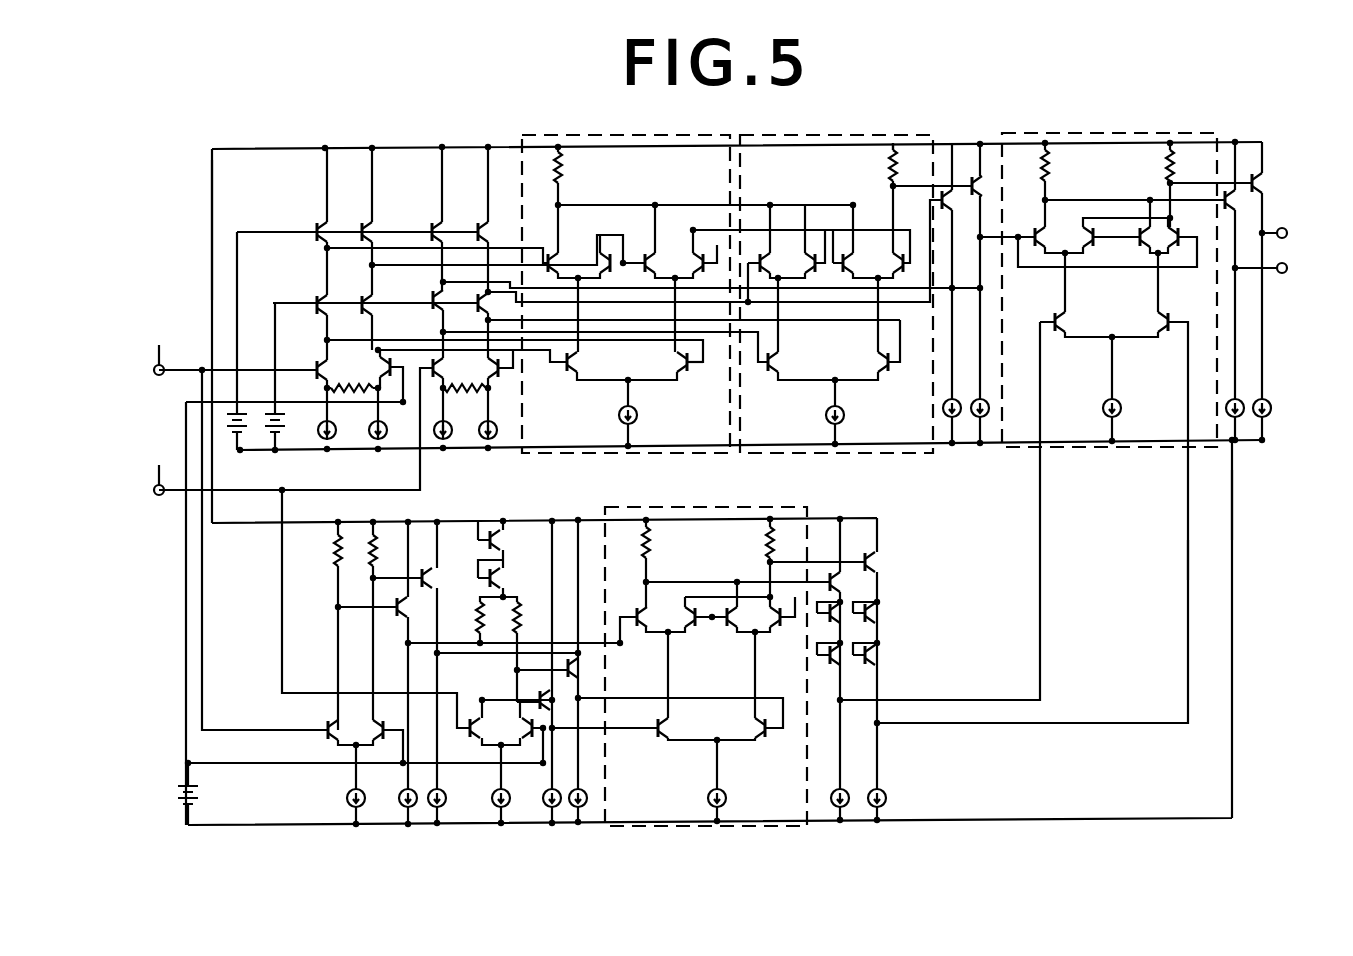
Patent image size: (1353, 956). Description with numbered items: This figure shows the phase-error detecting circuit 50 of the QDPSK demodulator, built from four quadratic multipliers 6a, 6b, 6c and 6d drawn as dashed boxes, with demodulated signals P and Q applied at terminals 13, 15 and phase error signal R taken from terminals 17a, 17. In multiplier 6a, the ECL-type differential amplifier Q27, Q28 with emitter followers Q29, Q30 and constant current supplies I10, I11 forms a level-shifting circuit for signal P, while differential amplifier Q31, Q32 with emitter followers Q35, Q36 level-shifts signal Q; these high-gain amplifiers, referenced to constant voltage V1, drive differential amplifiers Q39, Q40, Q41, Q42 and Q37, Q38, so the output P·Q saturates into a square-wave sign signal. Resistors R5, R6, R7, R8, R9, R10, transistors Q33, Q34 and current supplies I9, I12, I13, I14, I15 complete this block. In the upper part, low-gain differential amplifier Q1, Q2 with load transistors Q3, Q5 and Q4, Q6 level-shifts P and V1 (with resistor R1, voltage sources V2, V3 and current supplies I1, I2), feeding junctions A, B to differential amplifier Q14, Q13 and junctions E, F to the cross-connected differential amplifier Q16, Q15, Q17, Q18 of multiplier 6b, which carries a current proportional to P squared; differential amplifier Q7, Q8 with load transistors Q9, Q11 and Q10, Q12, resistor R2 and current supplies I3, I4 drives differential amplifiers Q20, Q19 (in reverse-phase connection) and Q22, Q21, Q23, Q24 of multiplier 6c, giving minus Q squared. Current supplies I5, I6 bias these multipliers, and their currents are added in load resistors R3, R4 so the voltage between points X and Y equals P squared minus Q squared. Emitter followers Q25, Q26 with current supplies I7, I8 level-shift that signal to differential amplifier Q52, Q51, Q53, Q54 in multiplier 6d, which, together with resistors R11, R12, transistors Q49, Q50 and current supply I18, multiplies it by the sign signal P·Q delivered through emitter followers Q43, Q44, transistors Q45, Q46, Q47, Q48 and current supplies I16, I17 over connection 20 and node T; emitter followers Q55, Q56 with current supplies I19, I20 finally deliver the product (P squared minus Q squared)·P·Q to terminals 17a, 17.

The flip-flop circuit 50 is at (212, 218).
The input terminal P 13 is at (154, 376).
The input terminal Q 15 is at (154, 488).
The terminal 17 is at (1287, 268).
The terminal 17a is at (1318, 222).
The connection line 20 is at (1232, 510).
The quadratic multiplier 6a is at (757, 826).
The quadratic multiplier 6b is at (586, 135).
The quadratic multiplier 6c is at (772, 135).
The quadratic multiplier 6d is at (1217, 370).
The constant voltage V1 is at (200, 797).
The voltage source V2 is at (240, 438).
The voltage source V3 is at (278, 440).
The resistor R1 is at (345, 396).
The resistor R2 is at (455, 396).
The load resistor R3 is at (560, 162).
The load resistor R4 is at (890, 168).
The resistor R5 is at (334, 560).
The resistor R6 is at (368, 548).
The resistor R7 is at (474, 618).
The resistor R8 is at (519, 616).
The resistor R9 is at (650, 538).
The resistor R10 is at (766, 546).
The resistor R11 is at (1048, 158).
The resistor R12 is at (1167, 162).
The current source I1 is at (334, 436).
The current source I2 is at (385, 436).
The current source I3 is at (450, 436).
The current source I4 is at (495, 436).
The current source I5 is at (636, 420).
The current source I6 is at (843, 420).
The current source I7 is at (958, 416).
The current source I8 is at (986, 416).
The current source I9 is at (347, 798).
The constant current supply I10 is at (400, 795).
The constant current supply I11 is at (428, 803).
The current source I12 is at (492, 802).
The current source I13 is at (544, 803).
The current source I14 is at (572, 808).
The current source I15 is at (708, 798).
The current source I16 is at (846, 790).
The current source I17 is at (887, 798).
The current source I18 is at (1120, 412).
The current source I19 is at (1243, 414).
The current source I20 is at (1270, 404).
The gain transistor Q1 is at (314, 360).
The gain transistor Q2 is at (384, 358).
The load transistor Q3 is at (313, 302).
The load transistor Q4 is at (359, 302).
The load transistor Q5 is at (313, 228).
The load transistor Q6 is at (358, 229).
The gain transistor Q7 is at (440, 366).
The gain transistor Q8 is at (505, 378).
The load transistor Q9 is at (430, 300).
The load transistor Q10 is at (498, 292).
The load transistor Q11 is at (431, 229).
The load transistor Q12 is at (477, 229).
The transistor Q13 is at (572, 378).
The transistor Q14 is at (683, 380).
The transistor Q15 is at (562, 254).
The transistor Q16 is at (610, 254).
The transistor Q17 is at (660, 254).
The transistor Q18 is at (706, 250).
The transistor Q19 is at (772, 378).
The transistor Q20 is at (884, 380).
The transistor Q21 is at (762, 252).
The transistor Q22 is at (812, 254).
The transistor Q23 is at (845, 252).
The transistor Q24 is at (896, 252).
The emitter follower Q25 is at (938, 192).
The emitter follower Q26 is at (976, 180).
The transistor Q27 is at (326, 734).
The transistor Q28 is at (378, 720).
The emitter follower Q29 is at (400, 598).
The emitter follower Q30 is at (430, 572).
The transistor Q31 is at (476, 745).
The transistor Q32 is at (526, 745).
The transistor Q33 is at (504, 535).
The transistor Q34 is at (505, 580).
The emitter follower Q35 is at (555, 698).
The emitter follower Q36 is at (580, 668).
The transistor Q37 is at (655, 736).
The transistor Q38 is at (760, 736).
The transistor Q39 is at (644, 615).
The transistor Q40 is at (692, 630).
The transistor Q41 is at (738, 615).
The transistor Q42 is at (778, 630).
The emitter follower Q43 is at (834, 575).
The emitter follower Q44 is at (872, 560).
The transistor Q45 is at (842, 620).
The transistor Q46 is at (878, 616).
The transistor Q47 is at (845, 665).
The transistor Q48 is at (878, 660).
The transistor Q49 is at (1062, 336).
The transistor Q50 is at (1162, 336).
The transistor Q51 is at (1032, 248).
The transistor Q52 is at (1088, 230).
The transistor Q53 is at (1135, 258).
The transistor Q54 is at (1174, 230).
The emitter follower Q55 is at (1222, 192).
The emitter follower Q56 is at (1262, 186).
The node T is at (1188, 555).